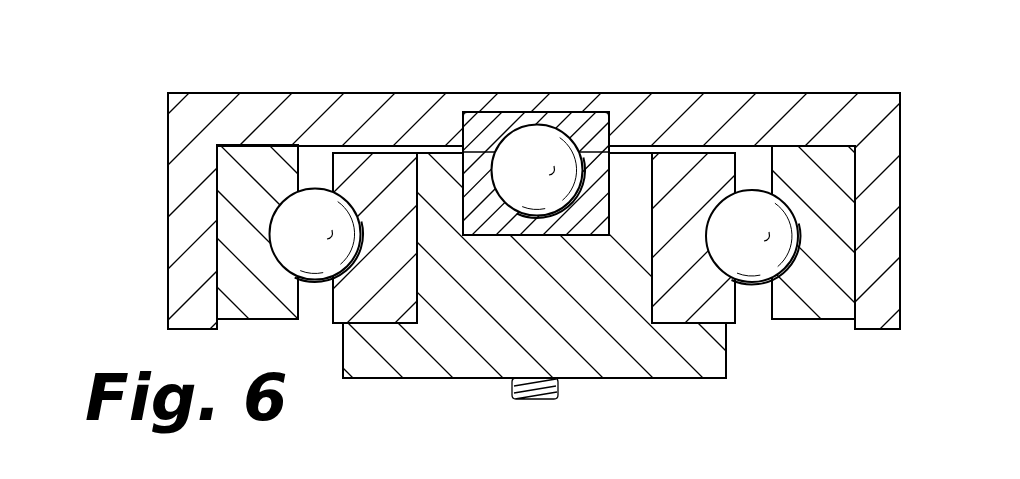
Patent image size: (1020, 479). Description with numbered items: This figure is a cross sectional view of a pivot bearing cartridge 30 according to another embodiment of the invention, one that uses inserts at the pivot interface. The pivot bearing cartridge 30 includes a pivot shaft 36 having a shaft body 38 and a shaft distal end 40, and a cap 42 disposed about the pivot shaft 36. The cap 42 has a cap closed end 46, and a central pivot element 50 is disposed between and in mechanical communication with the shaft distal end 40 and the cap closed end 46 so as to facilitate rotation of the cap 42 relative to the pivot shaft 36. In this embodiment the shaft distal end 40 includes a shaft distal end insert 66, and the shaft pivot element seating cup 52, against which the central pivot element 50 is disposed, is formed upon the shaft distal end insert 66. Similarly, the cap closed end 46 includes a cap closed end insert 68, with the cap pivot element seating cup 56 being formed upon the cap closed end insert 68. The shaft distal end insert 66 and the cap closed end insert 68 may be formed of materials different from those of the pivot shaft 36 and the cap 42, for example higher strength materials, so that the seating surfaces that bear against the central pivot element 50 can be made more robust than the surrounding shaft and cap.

The pivot bearing cartridge 30 is at (130, 96).
The pivot shaft 36 is at (512, 350).
The shaft body 38 is at (538, 280).
The shaft distal end 40 is at (638, 173).
The cap 42 is at (733, 105).
The cap closed end 46 is at (662, 105).
The central pivot element 50 is at (537, 142).
The shaft pivot element seating cup 52 is at (497, 224).
The cap pivot element seating cup 56 is at (493, 113).
The shaft distal end insert 66 is at (588, 217).
The cap closed end insert 68 is at (575, 118).